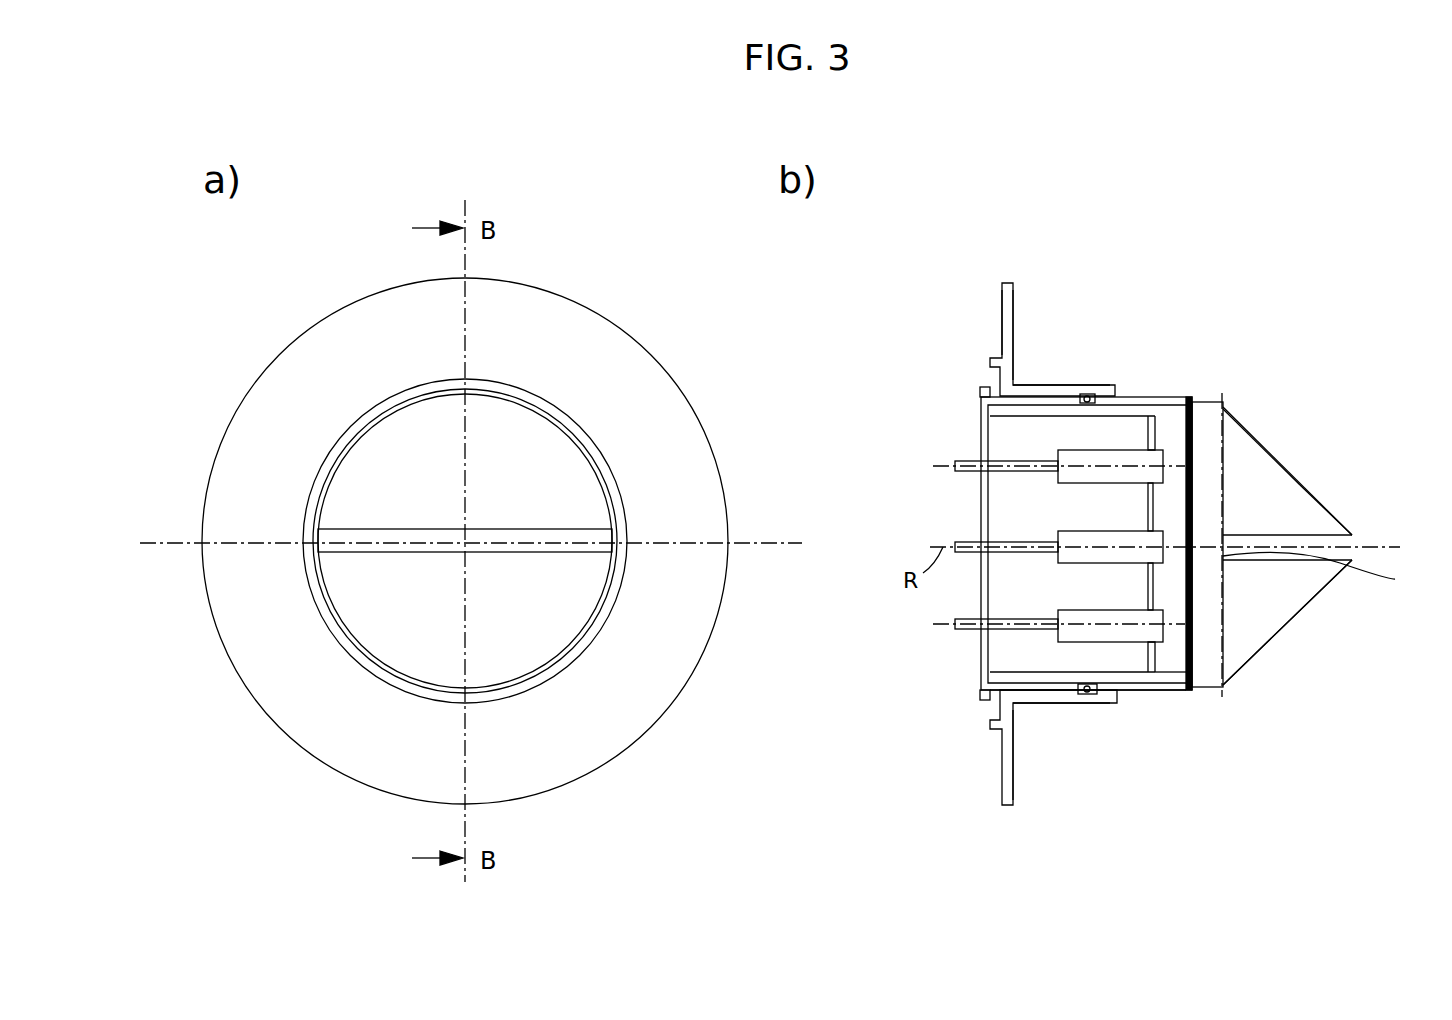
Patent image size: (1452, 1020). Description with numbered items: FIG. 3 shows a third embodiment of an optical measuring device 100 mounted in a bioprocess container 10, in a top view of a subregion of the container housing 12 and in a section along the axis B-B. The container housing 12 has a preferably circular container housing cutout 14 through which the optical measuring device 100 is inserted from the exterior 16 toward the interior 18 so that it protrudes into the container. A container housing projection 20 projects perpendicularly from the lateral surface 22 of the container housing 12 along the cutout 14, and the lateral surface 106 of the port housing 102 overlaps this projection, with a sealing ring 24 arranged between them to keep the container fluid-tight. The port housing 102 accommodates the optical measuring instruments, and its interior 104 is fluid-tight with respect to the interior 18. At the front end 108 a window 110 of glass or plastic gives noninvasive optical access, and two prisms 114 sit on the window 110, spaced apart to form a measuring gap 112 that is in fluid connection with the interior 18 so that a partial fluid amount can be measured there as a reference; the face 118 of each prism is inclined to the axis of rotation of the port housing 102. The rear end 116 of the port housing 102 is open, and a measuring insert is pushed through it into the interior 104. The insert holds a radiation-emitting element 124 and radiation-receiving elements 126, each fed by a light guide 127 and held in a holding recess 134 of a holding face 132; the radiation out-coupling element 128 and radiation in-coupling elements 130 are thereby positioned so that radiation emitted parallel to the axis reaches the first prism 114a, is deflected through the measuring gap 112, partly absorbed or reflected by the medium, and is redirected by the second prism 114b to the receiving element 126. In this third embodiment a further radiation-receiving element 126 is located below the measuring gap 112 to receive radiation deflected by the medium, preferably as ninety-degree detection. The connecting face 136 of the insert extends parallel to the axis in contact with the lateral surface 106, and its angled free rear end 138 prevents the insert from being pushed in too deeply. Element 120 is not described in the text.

The bioprocess container 10 is at (902, 284).
The container housing 12 is at (1000, 771).
The container housing cutout 14 is at (1028, 398).
The exterior 16 is at (1002, 305).
The interior 18 is at (1012, 785).
The container housing projection 20 is at (1096, 318).
The lateral surface 22 is at (1012, 312).
The sealing ring 24 is at (1191, 340).
The optical measuring device 100 is at (1148, 694).
The port housing 102 is at (1197, 511).
The interior of the port housing 104 is at (1168, 675).
The lateral surface of the port housing 106 is at (1128, 690).
The front end of the port housing 108 is at (1195, 692).
The window 110 is at (1208, 424).
The measuring gap 112 is at (1333, 547).
The prisms 114 is at (1327, 643).
The first prism 114a is at (1290, 495).
The second prism 114b is at (1308, 578).
The rear end of the port housing 116 is at (985, 396).
The face of the prism 118 is at (1330, 510).
The elastic element 120 is at (1327, 570).
The radiation-emitting element 124 is at (1068, 460).
The radiation-receiving element 126 is at (1068, 540).
The light guide 127 is at (850, 529).
The radiation out-coupling element 128 is at (1093, 462).
The radiation in-coupling element 130 is at (1093, 542).
The holding face 132 is at (1153, 505).
The holding recess 134 is at (1150, 447).
The connecting face 136 is at (982, 688).
The rear end of the connecting face 138 is at (1120, 416).